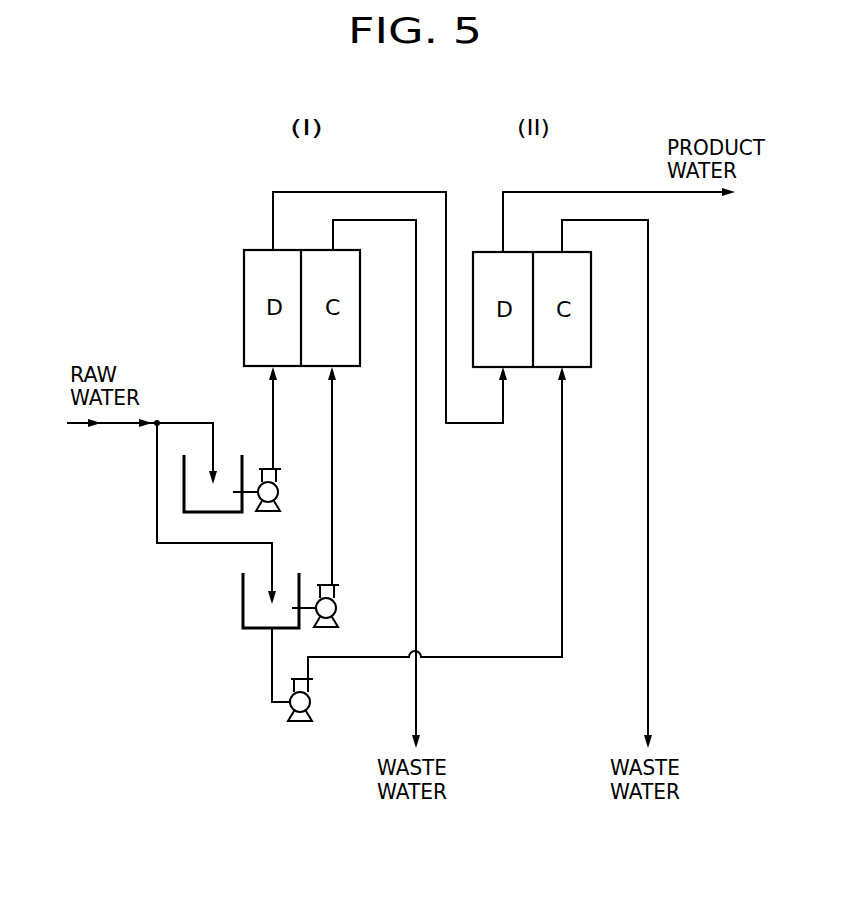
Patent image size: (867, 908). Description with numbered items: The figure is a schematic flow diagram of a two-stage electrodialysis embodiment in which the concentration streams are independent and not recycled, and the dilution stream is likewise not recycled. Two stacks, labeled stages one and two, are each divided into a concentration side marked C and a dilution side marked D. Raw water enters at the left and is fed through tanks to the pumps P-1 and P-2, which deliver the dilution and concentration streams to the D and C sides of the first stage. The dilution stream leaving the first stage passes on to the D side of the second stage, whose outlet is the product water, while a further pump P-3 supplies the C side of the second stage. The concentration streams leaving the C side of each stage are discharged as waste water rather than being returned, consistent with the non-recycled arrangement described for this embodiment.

The pump P-1 is at (274, 491).
The pump P-2 is at (336, 607).
The pump P-3 is at (321, 700).